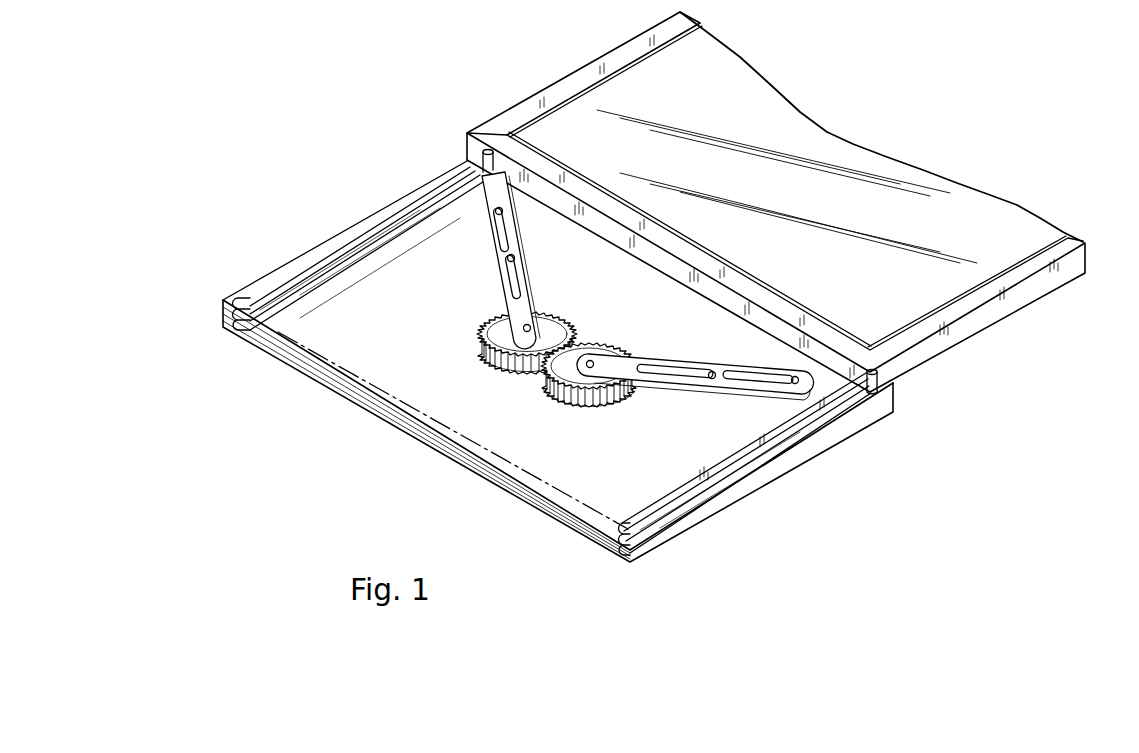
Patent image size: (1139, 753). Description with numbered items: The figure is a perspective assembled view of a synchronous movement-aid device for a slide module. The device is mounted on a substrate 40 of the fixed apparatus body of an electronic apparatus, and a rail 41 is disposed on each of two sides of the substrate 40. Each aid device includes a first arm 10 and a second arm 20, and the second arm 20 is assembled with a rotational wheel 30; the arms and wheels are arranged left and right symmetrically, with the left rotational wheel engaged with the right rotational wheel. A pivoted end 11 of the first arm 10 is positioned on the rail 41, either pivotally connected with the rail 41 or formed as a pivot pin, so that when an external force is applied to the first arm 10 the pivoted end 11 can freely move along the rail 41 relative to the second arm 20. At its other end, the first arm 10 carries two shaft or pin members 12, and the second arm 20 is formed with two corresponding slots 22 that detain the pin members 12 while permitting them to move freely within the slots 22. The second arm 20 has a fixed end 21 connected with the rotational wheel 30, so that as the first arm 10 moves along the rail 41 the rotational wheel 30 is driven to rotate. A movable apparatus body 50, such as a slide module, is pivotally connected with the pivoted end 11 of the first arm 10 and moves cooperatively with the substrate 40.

The first arm 10 is at (550, 358).
The pivoted end 11 is at (483, 143).
The shaft or pin member 12 is at (520, 261).
The second arm 20 is at (617, 307).
The fixed end 21 is at (525, 332).
The slot 22 is at (513, 238).
The rotational wheel 30 is at (473, 353).
The substrate 40 is at (483, 467).
The rail 41 is at (290, 277).
The movable apparatus body 50 is at (783, 110).